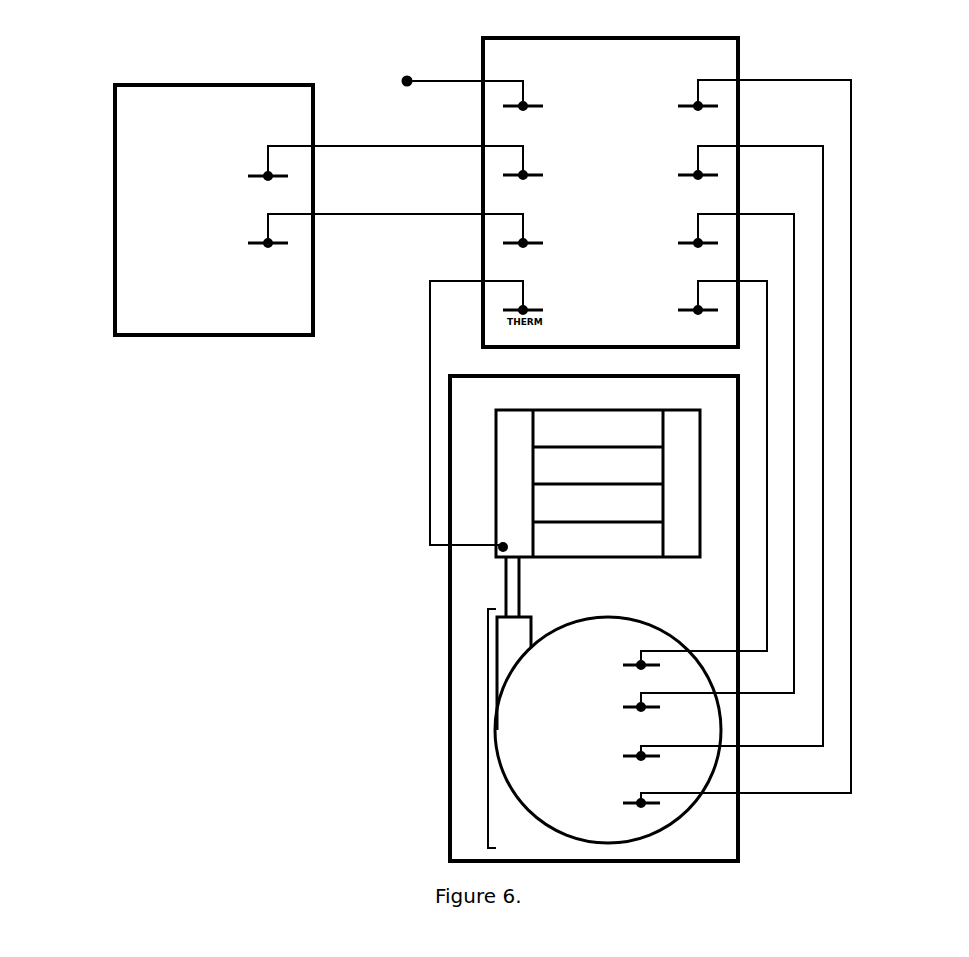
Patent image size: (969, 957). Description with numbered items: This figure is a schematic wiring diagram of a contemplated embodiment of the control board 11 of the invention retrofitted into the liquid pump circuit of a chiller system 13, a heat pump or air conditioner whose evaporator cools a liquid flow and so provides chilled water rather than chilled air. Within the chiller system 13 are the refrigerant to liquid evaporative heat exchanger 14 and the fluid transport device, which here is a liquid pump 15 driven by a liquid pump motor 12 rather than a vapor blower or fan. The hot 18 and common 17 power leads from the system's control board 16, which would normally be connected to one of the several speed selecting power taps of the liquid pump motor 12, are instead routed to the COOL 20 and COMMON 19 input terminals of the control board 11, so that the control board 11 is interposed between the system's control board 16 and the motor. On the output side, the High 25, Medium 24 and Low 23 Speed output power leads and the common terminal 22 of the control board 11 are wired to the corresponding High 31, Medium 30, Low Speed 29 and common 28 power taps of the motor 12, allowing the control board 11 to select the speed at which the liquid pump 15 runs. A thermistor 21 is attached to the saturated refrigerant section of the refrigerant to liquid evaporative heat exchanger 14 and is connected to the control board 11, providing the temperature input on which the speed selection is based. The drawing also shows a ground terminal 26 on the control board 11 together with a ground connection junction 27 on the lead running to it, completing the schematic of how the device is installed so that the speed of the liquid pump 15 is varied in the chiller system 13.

The control board 11 is at (653, 176).
The liquid pump motor 12 is at (608, 719).
The chiller system 13 is at (565, 608).
The refrigerant to liquid evaporative heat exchanger 14 is at (576, 483).
The liquid pump 15 is at (473, 728).
The system's control board 16 is at (176, 210).
The common power lead 17 is at (241, 168).
The hot power lead 18 is at (241, 234).
The COMMON input terminal 19 is at (549, 170).
The COOL input terminal 20 is at (549, 238).
The thermistor 21 is at (456, 573).
The common terminal 22 is at (673, 101).
The Low Speed output power lead 23 is at (673, 170).
The Medium Speed output power lead 24 is at (673, 238).
The High Speed output power lead 25 is at (673, 305).
The ground terminal 26 is at (549, 101).
The ground wire junction 27 is at (362, 57).
The common power tap 28 is at (613, 795).
The Low Speed power tap 29 is at (613, 747).
The Medium power tap 30 is at (613, 698).
The High power tap 31 is at (613, 656).